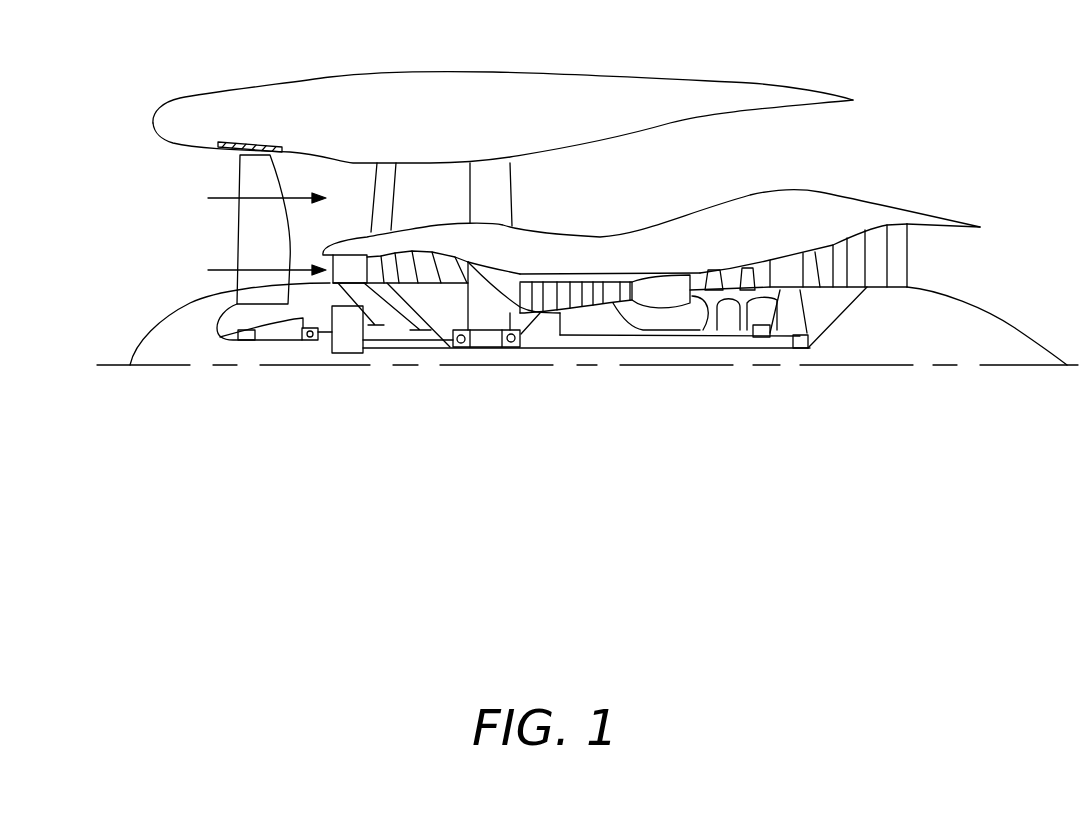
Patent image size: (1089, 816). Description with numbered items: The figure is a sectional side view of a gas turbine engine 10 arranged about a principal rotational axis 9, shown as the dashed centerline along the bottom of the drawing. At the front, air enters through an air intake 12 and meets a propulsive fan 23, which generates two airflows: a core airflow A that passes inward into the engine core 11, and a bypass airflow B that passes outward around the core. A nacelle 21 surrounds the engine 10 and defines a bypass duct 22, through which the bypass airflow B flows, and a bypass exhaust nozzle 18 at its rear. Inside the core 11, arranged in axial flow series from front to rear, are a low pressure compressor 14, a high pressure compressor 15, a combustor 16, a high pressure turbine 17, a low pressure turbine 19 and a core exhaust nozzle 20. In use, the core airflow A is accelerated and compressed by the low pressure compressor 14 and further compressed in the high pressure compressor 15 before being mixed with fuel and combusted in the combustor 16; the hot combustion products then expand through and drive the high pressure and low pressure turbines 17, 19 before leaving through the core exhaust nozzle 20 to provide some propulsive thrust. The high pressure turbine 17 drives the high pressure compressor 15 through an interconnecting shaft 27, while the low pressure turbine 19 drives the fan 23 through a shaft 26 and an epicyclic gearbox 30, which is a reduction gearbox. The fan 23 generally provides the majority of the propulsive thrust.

The principal rotational axis 9 is at (753, 365).
The gas turbine engine 10 is at (494, 81).
The core 11 is at (631, 252).
The air intake 12 is at (214, 254).
The low pressure compressor 14 is at (423, 262).
The high pressure compressor 15 is at (580, 293).
The combustor 16 is at (658, 293).
The high pressure turbine 17 is at (727, 280).
The bypass exhaust nozzle 18 is at (852, 142).
The low pressure turbine 19 is at (875, 244).
The core exhaust nozzle 20 is at (946, 258).
The nacelle 21 is at (486, 87).
The bypass duct 22 is at (796, 162).
The propulsive fan 23 is at (240, 231).
The shaft 26 is at (573, 350).
The interconnecting shaft 27 is at (615, 348).
The epicyclic gearbox 30 is at (343, 340).
The core airflow A is at (255, 269).
The bypass airflow B is at (255, 198).